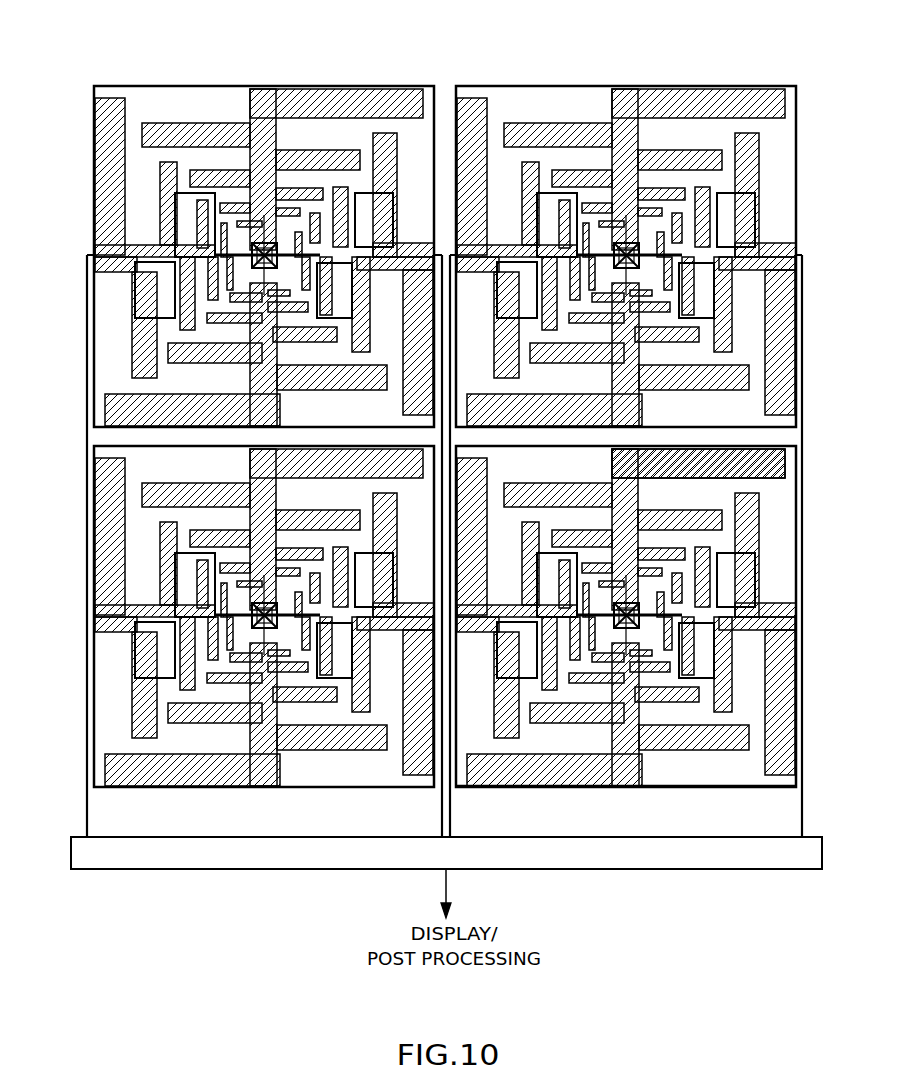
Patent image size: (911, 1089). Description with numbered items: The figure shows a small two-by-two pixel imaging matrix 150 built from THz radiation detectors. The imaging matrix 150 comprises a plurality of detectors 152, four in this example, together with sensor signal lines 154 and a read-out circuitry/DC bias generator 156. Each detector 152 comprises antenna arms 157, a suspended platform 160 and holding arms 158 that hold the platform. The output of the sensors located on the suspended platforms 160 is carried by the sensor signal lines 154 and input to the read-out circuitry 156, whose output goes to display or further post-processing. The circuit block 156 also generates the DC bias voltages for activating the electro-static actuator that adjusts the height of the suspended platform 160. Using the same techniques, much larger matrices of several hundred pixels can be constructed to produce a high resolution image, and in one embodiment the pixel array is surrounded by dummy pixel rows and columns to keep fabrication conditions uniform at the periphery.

The imaging matrix 150 is at (450, 469).
The detector 152 is at (805, 153).
The sensor signal line 154 is at (87, 814).
The read-out circuitry/DC bias generator 156 is at (678, 870).
The antenna arm 157 is at (765, 473).
The holding arm 158 is at (364, 192).
The suspended platform 160 is at (708, 787).